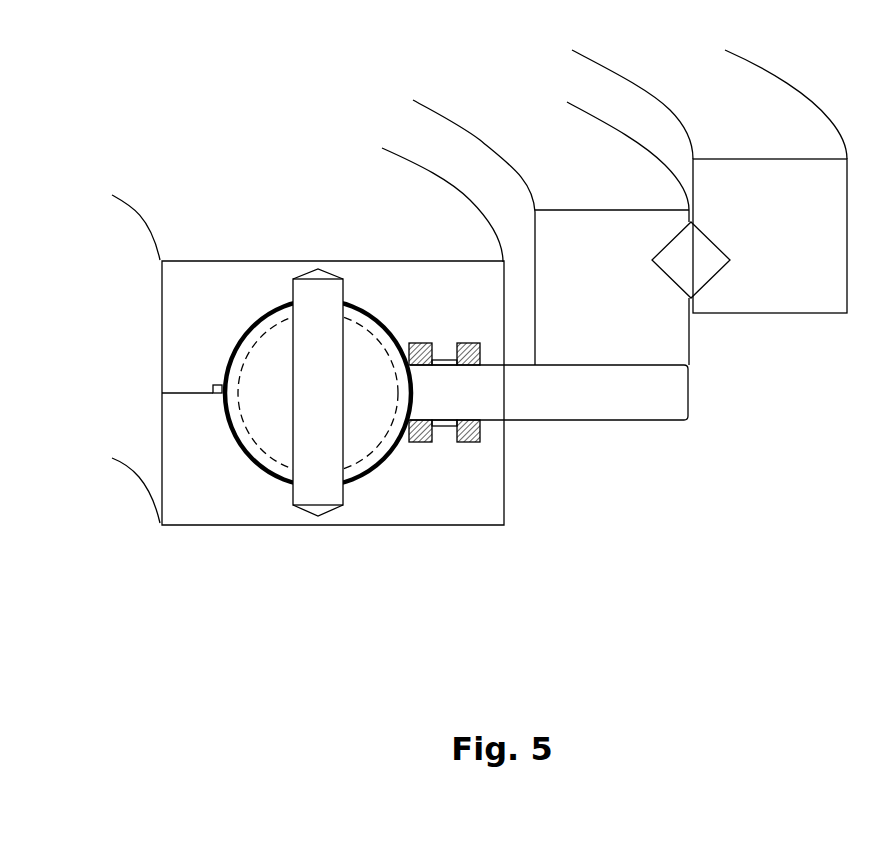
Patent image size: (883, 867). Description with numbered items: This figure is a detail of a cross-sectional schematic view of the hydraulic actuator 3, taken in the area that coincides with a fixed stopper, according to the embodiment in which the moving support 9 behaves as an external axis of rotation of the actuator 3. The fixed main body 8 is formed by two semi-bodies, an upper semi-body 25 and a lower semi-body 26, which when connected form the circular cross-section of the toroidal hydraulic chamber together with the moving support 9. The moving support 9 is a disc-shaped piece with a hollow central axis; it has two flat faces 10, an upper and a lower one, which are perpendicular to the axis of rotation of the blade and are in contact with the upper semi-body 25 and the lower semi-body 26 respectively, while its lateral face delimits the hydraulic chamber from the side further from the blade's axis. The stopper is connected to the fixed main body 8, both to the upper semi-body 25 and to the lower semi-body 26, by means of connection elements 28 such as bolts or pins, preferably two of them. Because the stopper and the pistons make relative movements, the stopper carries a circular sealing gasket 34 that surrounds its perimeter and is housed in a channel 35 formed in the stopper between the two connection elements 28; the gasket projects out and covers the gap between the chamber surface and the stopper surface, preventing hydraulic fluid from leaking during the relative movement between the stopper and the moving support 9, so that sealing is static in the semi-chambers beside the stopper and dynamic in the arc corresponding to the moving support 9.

The actuator 3 is at (729, 566).
The fixed main body 8 is at (126, 385).
The moving support 9 is at (557, 494).
The flat faces 10 is at (585, 368).
The upper semi-body 25 is at (202, 287).
The lower semi-body 26 is at (197, 483).
The connection elements 28 is at (325, 428).
The circular sealing gasket 34 is at (280, 302).
The channel 35 is at (280, 463).